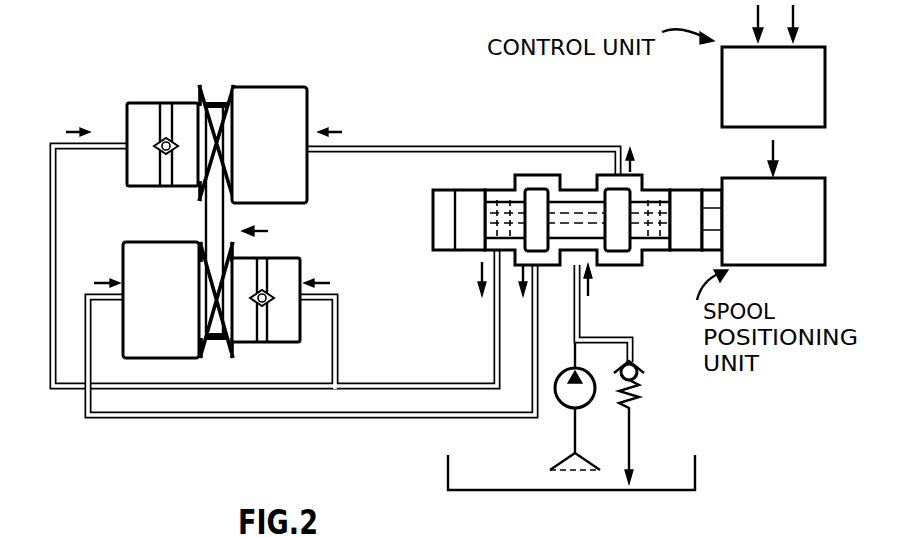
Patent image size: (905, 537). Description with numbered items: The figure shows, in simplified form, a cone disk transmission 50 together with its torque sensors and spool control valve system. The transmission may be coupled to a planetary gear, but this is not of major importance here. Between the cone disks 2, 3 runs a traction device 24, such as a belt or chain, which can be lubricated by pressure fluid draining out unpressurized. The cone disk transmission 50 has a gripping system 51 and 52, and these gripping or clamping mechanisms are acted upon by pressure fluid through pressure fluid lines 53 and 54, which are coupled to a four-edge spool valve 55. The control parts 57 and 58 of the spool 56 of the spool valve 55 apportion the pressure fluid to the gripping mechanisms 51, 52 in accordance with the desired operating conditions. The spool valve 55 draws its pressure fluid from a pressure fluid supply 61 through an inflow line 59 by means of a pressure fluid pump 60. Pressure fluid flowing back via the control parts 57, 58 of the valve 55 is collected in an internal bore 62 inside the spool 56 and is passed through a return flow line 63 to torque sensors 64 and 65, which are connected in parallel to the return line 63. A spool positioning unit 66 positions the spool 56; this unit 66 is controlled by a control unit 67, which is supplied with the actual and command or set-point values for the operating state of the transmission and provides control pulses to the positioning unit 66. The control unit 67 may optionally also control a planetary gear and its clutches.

The cone disk 2 is at (226, 140).
The cone disk 3 is at (202, 294).
The traction device 24 is at (212, 217).
The cone disk transmission 50 is at (268, 231).
The gripping system 51 is at (289, 111).
The gripping system 52 is at (146, 352).
The pressure fluid line 53 is at (412, 148).
The pressure fluid line 54 is at (200, 418).
The four-edge spool valve 55 is at (541, 175).
The spool 56 is at (590, 230).
The control part 57 is at (537, 200).
The control part 58 is at (622, 196).
The inflow line 59 is at (580, 314).
The pressure fluid pump 60 is at (566, 395).
The pressure fluid supply 61 is at (478, 468).
The internal bore 62 is at (508, 200).
The return flow line 63 is at (410, 389).
The torque sensor 64 is at (150, 118).
The torque sensor 65 is at (278, 330).
The spool positioning unit 66 is at (751, 191).
The control unit 67 is at (730, 73).